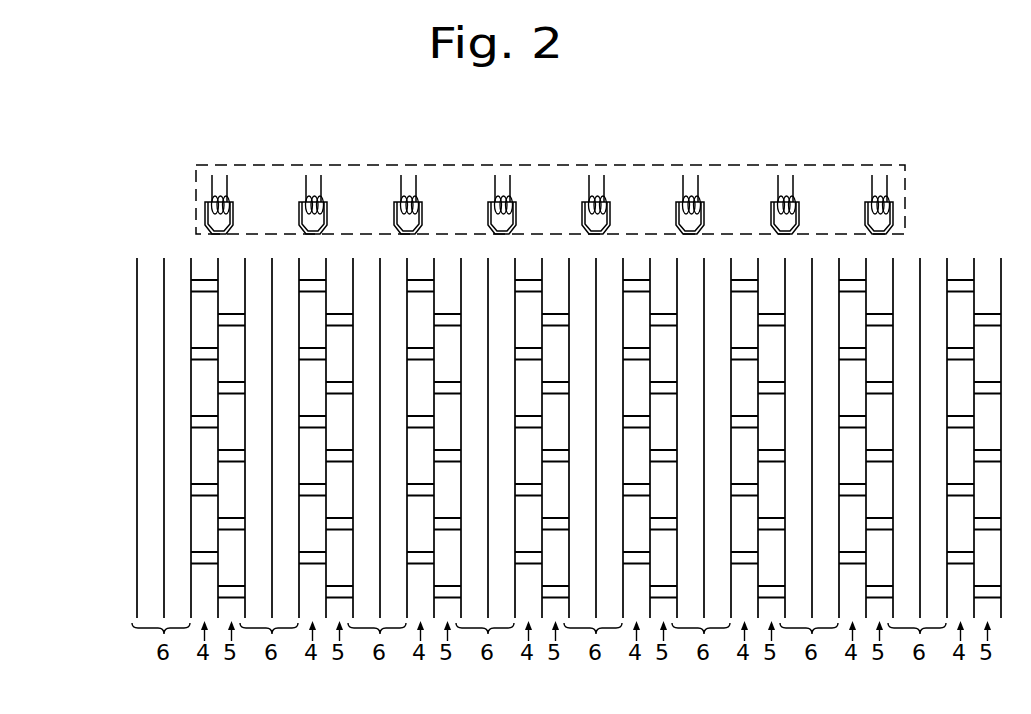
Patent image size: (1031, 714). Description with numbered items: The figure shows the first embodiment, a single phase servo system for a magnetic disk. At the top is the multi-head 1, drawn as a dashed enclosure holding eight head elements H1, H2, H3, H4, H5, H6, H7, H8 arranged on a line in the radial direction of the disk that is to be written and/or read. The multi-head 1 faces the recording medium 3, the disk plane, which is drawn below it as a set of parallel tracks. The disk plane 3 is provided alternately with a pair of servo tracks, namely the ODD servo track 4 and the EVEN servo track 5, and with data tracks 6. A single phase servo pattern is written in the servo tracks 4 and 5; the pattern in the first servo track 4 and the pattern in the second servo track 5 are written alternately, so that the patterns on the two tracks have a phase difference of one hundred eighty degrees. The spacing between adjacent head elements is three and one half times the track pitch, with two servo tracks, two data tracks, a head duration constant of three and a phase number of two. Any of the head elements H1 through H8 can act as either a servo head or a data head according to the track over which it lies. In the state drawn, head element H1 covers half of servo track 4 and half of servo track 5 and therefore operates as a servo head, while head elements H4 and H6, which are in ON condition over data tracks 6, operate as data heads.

The multi-head 1 is at (905, 194).
The recording medium 3 is at (107, 617).
The ODD servo track 4 is at (582, 461).
The EVEN servo track 5 is at (609, 489).
The data tracks 6 is at (566, 461).
The head element H1 is at (237, 208).
The head element H2 is at (330, 208).
The head element H3 is at (805, 133).
The head element H4 is at (502, 204).
The head element H5 is at (596, 204).
The head element H6 is at (690, 204).
The head element H7 is at (785, 204).
The head element H8 is at (862, 210).